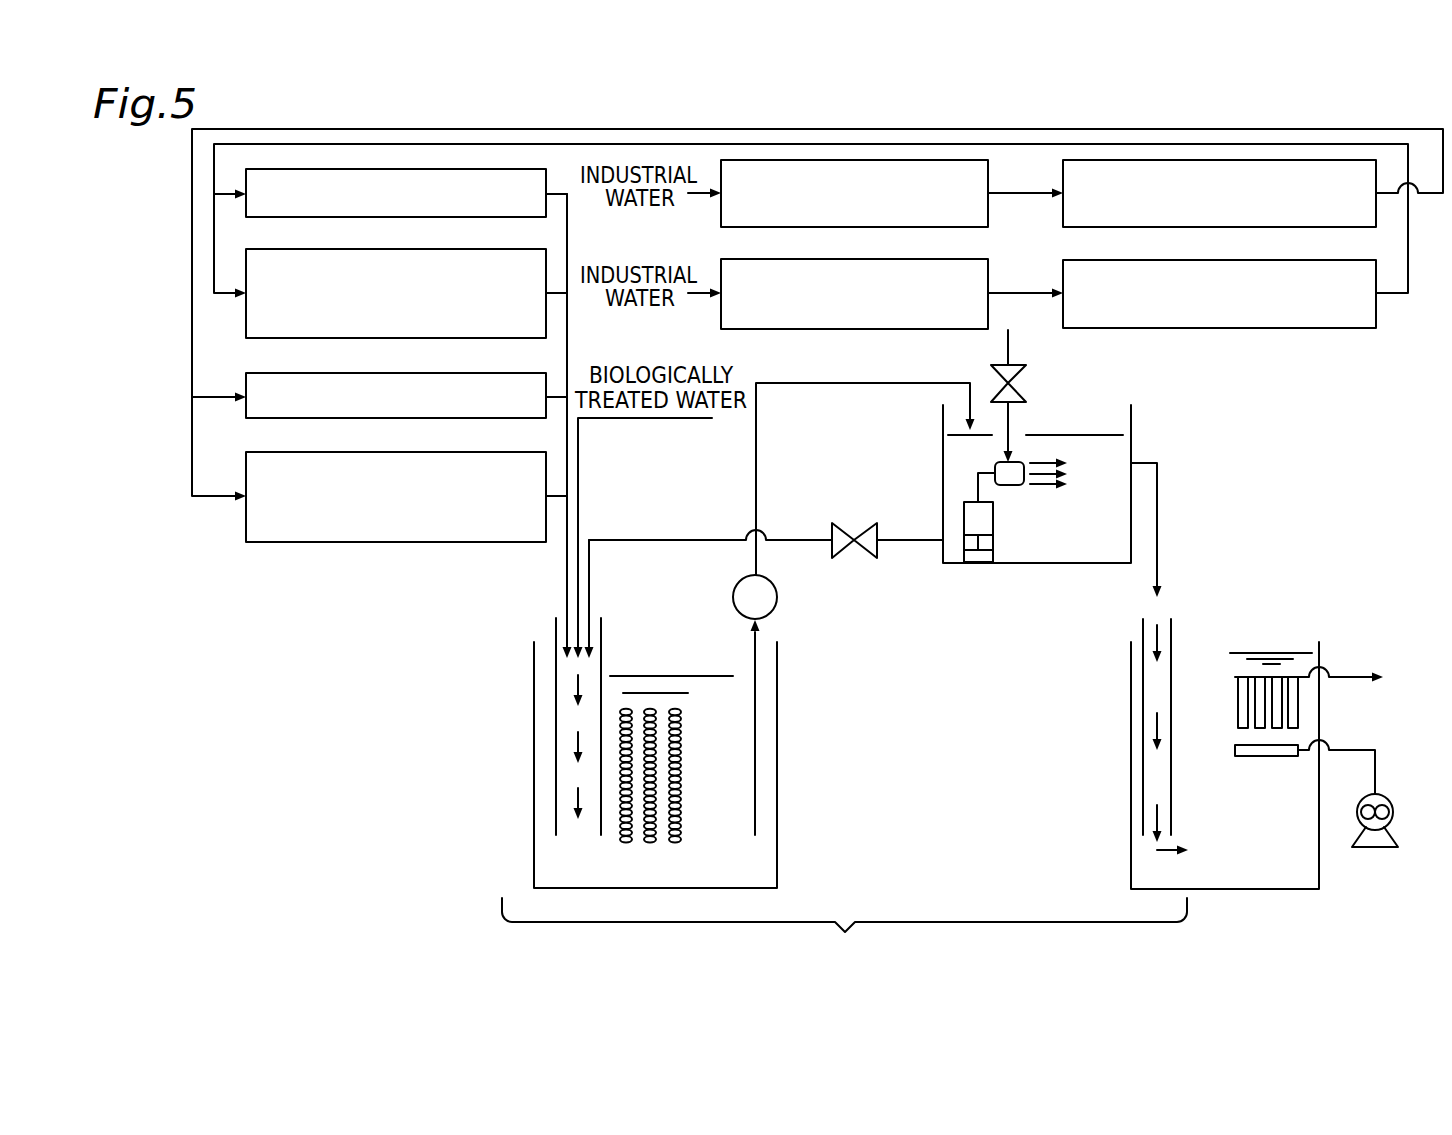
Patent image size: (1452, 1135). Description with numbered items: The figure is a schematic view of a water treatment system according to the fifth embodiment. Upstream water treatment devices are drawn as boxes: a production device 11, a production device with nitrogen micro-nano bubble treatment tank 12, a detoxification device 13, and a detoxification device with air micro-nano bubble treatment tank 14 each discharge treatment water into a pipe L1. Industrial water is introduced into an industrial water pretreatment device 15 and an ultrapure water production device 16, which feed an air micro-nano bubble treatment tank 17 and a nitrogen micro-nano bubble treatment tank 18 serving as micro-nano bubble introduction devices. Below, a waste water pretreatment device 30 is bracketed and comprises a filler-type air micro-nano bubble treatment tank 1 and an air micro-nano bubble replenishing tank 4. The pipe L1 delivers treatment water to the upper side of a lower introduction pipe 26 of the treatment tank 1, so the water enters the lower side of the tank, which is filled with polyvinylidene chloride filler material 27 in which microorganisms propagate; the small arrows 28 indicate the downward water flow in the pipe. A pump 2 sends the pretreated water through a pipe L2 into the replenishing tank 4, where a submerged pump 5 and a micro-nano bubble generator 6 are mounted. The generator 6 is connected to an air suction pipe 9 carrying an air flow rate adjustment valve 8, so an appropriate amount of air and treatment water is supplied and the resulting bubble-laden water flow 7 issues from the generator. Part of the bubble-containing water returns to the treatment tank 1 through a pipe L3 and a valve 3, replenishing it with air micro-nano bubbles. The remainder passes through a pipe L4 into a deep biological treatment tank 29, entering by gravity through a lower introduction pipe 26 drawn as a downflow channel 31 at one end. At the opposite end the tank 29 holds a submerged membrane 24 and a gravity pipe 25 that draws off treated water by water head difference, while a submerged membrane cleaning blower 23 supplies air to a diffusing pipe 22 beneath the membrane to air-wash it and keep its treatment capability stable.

The filler-type air micro-nano bubble treatment tank 1 is at (534, 797).
The pump 2 is at (788, 603).
The valve 3 is at (878, 530).
The air micro-nano bubble replenishing tank 4 is at (1133, 425).
The submerged pump 5 is at (993, 520).
The micro-nano bubble generator 6 is at (1008, 482).
The water flow 7 is at (1045, 458).
The air flow rate adjustment valve 8 is at (1028, 383).
The air suction pipe 9 is at (1008, 345).
The production device 11 is at (360, 218).
The production device with nitrogen micro-nano bubble treatment tank 12 is at (360, 339).
The detoxification device 13 is at (360, 419).
The detoxification device with air micro-nano bubble treatment tank 14 is at (360, 543).
The industrial water pretreatment device 15 is at (811, 228).
The ultrapure water production device 16 is at (811, 330).
The air micro-nano bubble treatment tank 17 is at (1220, 228).
The nitrogen micro-nano bubble treatment tank 18 is at (1220, 330).
The diffusing pipe 22 is at (1262, 757).
The submerged membrane cleaning blower 23 is at (1375, 848).
The submerged membrane 24 is at (1240, 698).
The gravity pipe 25 is at (1350, 677).
The lower introduction pipe 26 is at (556, 707).
The polyvinylidene chloride filler material 27 is at (685, 746).
The water flow 28 is at (576, 746).
The deep biological treatment tank 29 is at (1122, 783).
The waste water pretreatment device 30 is at (844, 930).
The downflow channel 31 is at (1143, 695).
The pipe L1 is at (567, 570).
The pipe L2 is at (853, 384).
The pipe L3 is at (800, 540).
The pipe L4 is at (1158, 533).